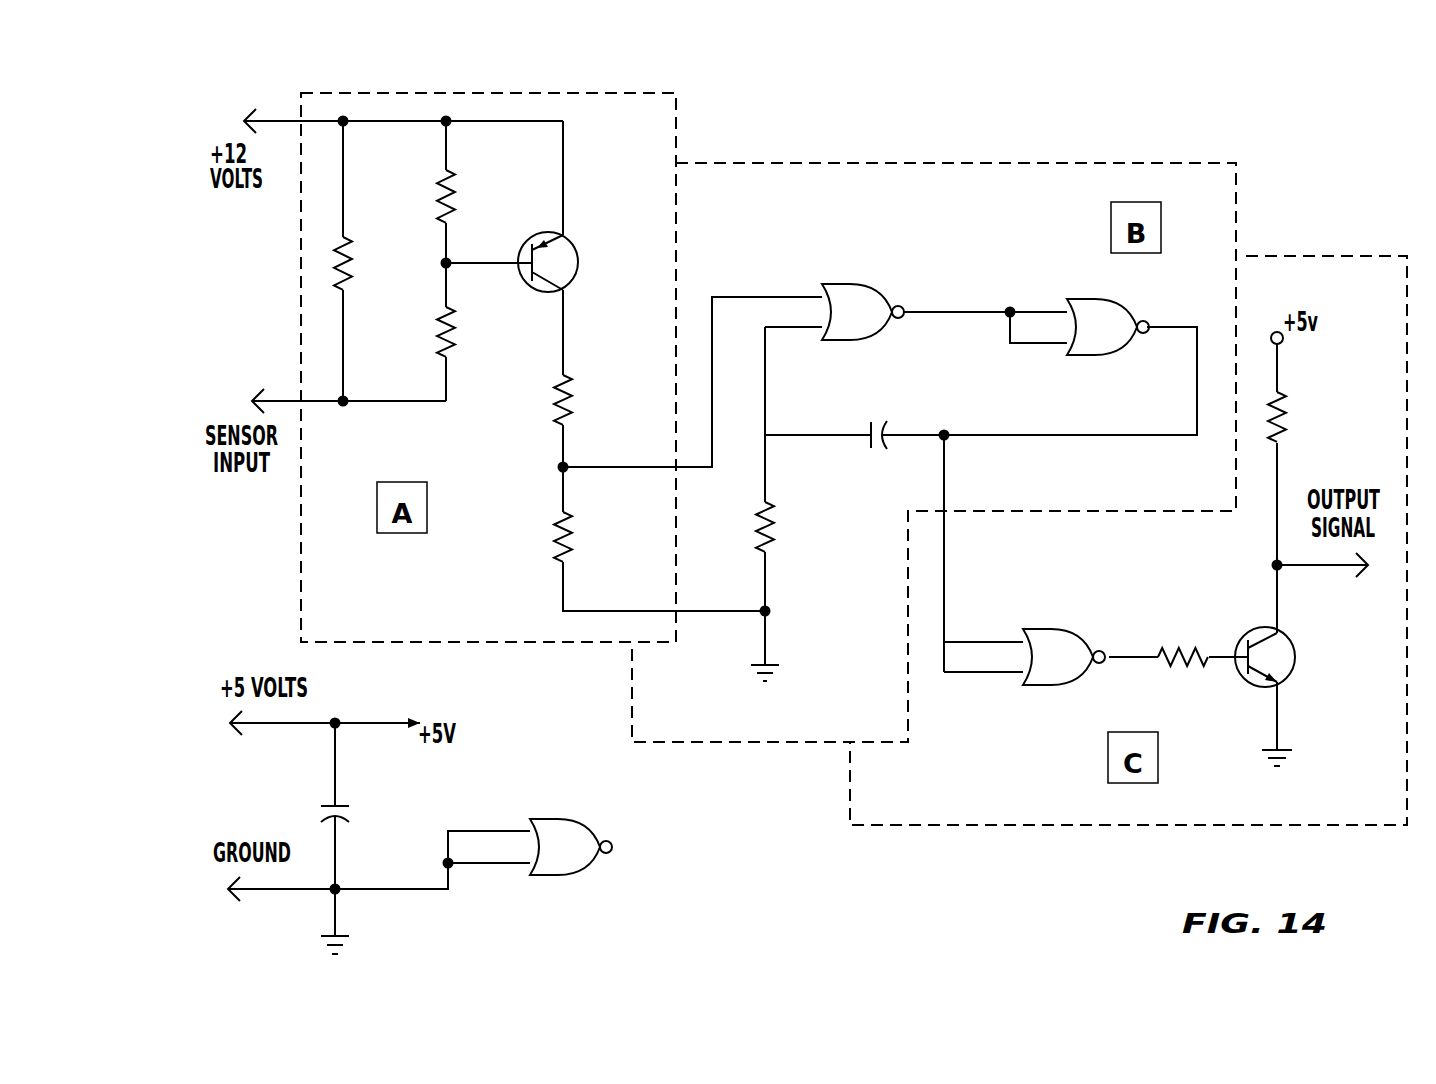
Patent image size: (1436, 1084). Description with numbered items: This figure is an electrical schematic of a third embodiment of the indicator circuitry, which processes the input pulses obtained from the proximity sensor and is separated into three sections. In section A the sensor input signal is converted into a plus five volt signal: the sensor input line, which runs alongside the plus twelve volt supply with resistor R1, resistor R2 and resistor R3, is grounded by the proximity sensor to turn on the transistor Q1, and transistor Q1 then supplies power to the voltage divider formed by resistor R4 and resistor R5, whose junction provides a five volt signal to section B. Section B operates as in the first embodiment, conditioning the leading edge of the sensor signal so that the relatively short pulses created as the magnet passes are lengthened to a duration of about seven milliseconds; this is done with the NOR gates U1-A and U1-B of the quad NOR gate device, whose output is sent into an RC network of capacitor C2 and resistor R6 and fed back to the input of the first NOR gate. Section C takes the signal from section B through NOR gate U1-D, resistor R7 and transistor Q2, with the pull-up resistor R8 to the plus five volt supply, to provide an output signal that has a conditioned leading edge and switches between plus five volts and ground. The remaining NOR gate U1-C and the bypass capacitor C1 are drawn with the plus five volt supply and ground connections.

The resistor R1 1.8K R1 is at (368, 266).
The resistor R2 3.9K R2 is at (472, 199).
The resistor R3 33K R3 is at (470, 330).
The resistor R4 is at (591, 400).
The resistor R5 is at (591, 539).
The resistor R6 is at (794, 527).
The resistor R7 10K R7 is at (1183, 658).
The pull-up resistor 3.3K R8 is at (1300, 387).
The capacitor C1 0.1 C1 is at (347, 815).
The capacitor C2 is at (882, 437).
The transistor Q1 is at (586, 247).
The transistor Q2 2N3904 Q2 is at (1307, 657).
The NOR gate U1-A 4001B U1-A is at (861, 311).
The NOR gate U1-B 4001B U1-B is at (1103, 324).
The NOR gate U1-C 4001B U1-C is at (573, 846).
The NOR gate U1-D 4001B U1-D is at (1059, 655).